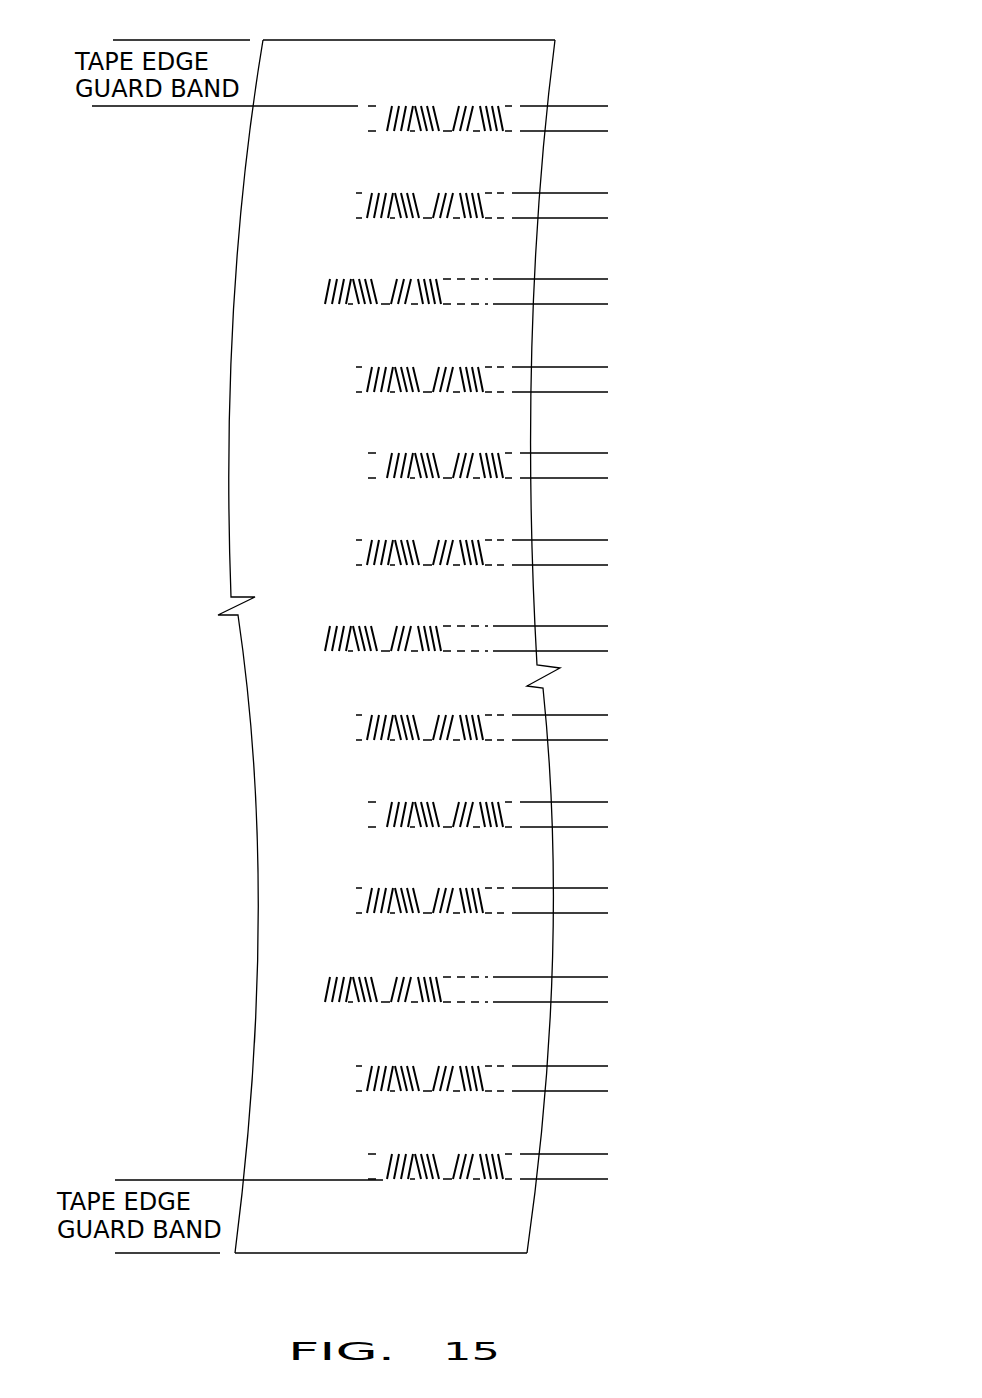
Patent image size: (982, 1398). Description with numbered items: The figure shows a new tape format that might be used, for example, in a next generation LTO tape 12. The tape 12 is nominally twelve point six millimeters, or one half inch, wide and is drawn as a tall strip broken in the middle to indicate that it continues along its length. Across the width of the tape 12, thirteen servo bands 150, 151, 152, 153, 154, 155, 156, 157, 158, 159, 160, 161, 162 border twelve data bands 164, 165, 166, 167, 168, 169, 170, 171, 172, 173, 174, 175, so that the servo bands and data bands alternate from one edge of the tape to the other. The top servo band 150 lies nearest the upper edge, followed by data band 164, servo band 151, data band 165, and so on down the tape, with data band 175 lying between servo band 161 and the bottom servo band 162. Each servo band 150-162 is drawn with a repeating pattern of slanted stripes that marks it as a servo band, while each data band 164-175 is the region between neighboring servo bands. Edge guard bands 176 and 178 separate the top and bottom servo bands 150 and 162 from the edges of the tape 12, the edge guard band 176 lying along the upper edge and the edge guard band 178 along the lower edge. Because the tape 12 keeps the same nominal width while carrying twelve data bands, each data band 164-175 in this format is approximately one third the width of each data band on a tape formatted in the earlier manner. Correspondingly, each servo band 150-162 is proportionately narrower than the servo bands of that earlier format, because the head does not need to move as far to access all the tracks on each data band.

The tape 12 is at (240, 401).
The servo band 0 150 is at (577, 114).
The servo band 1 151 is at (577, 201).
The servo band 2 152 is at (577, 287).
The servo band 3 153 is at (577, 375).
The servo band 4 154 is at (577, 461).
The servo band 5 155 is at (577, 548).
The servo band 6 156 is at (577, 634).
The servo band 7 157 is at (577, 723).
The servo band 8 158 is at (577, 810).
The servo band 9 159 is at (577, 896).
The servo band 10 160 is at (577, 985).
The servo band 11 161 is at (577, 1074).
The servo band 12 162 is at (577, 1162).
The data band 0 164 is at (350, 149).
The data band 1 165 is at (350, 236).
The data band 2 166 is at (332, 322).
The data band 3 167 is at (364, 410).
The data band 4 168 is at (353, 496).
The data band 5 169 is at (354, 583).
The data band 6 170 is at (339, 669).
The data band 7 171 is at (352, 758).
The data band 8 172 is at (352, 845).
The data band 9 173 is at (353, 931).
The data band 10 174 is at (352, 1047).
The data band 11 175 is at (349, 1109).
The edge guard band 176 is at (433, 50).
The edge guard band 178 is at (497, 1235).